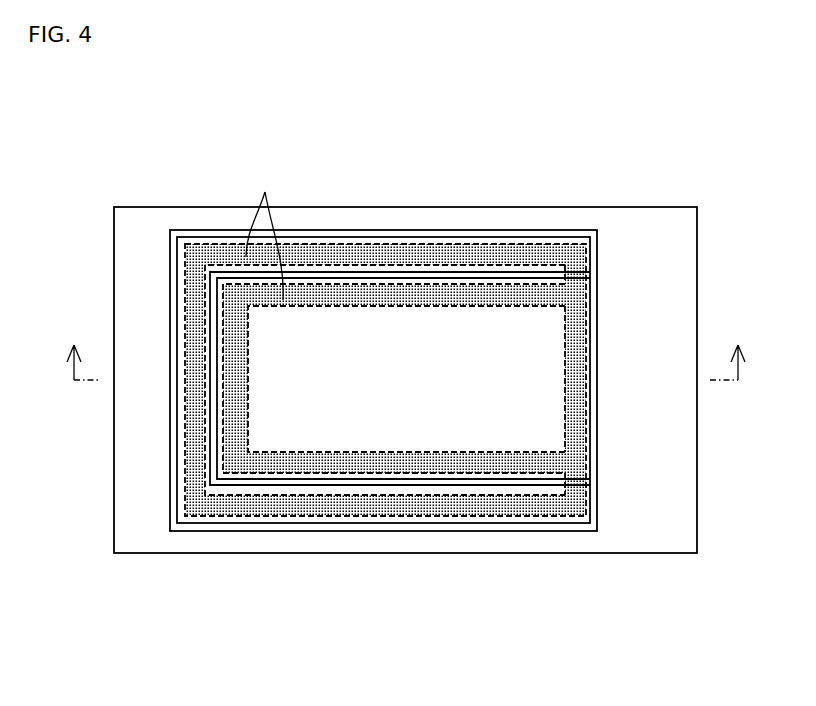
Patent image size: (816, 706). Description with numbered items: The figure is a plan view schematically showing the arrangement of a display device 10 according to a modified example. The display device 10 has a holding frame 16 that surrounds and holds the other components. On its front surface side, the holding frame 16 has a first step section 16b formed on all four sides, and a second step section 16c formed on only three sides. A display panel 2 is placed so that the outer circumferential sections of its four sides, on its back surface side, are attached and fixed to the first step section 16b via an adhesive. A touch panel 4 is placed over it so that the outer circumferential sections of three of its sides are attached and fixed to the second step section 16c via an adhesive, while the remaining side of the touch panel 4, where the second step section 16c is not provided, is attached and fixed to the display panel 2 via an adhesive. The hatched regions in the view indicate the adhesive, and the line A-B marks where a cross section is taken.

The display device 10 is at (663, 156).
The holding frame 16 is at (687, 245).
The second step section 16c is at (515, 228).
The touch panel 4 is at (470, 237).
The first step section 16b is at (422, 272).
The display panel 2 is at (373, 279).